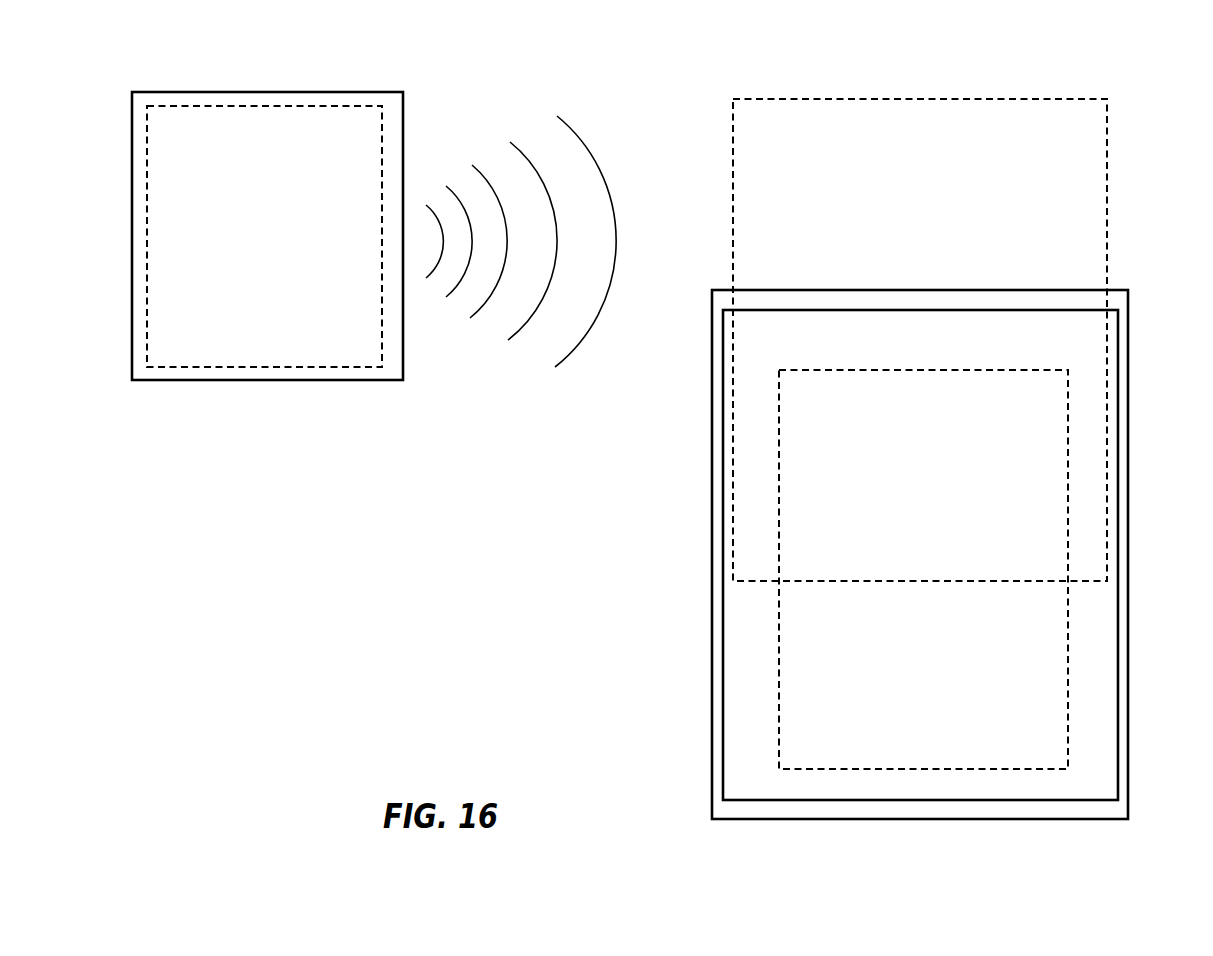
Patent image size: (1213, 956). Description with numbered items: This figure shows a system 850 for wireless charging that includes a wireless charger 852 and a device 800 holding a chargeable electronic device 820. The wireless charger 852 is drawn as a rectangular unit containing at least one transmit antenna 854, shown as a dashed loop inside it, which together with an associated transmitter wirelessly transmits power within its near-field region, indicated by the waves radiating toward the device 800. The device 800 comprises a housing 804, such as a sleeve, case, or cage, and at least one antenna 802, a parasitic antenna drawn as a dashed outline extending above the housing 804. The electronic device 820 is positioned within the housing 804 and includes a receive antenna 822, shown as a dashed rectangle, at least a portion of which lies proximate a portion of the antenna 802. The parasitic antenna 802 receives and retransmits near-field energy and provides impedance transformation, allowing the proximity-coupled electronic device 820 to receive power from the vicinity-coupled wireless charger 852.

The device 800 is at (722, 286).
The antenna 802 is at (1107, 128).
The housing 804 is at (1129, 297).
The electronic device 820 is at (975, 311).
The receive antenna 822 is at (922, 370).
The system 850 is at (927, 77).
The wireless charger 852 is at (330, 92).
The transmit antenna 854 is at (258, 106).